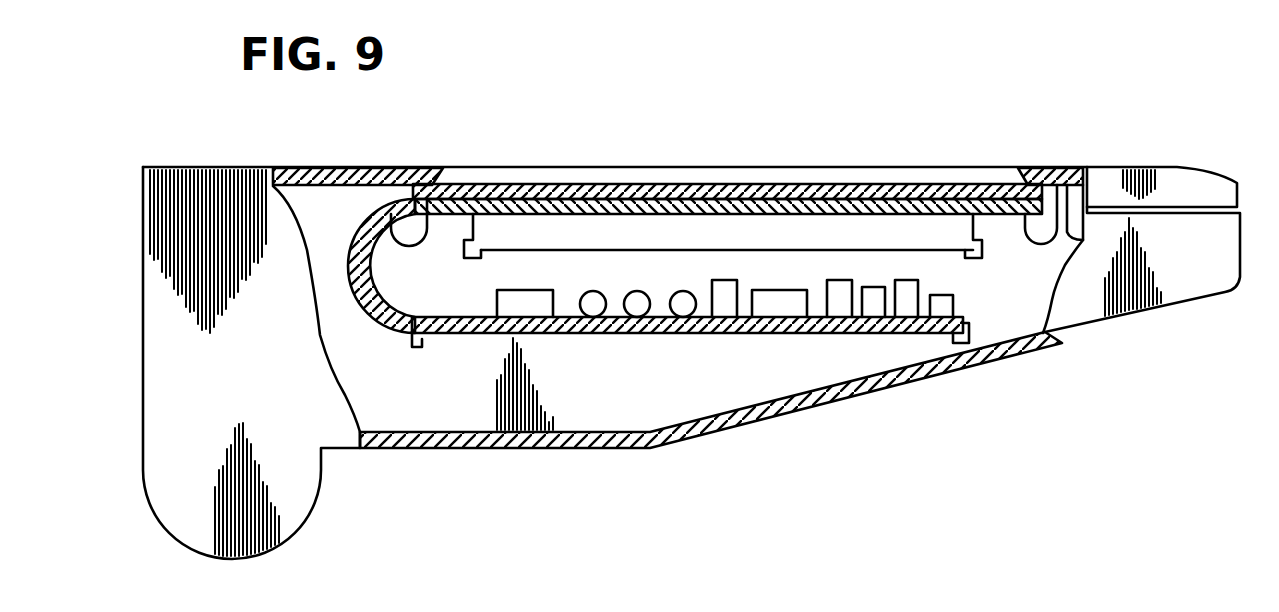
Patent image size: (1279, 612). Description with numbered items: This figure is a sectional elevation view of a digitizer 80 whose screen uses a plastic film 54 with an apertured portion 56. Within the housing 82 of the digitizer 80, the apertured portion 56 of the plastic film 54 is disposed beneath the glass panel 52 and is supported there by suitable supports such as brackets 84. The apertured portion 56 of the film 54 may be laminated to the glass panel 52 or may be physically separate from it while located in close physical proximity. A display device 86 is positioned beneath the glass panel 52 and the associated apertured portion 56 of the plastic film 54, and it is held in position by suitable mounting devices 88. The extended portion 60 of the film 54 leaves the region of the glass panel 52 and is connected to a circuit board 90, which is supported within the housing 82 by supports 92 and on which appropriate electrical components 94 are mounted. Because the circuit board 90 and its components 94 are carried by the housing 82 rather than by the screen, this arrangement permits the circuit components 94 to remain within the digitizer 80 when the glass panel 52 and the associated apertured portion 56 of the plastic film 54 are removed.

The digitizer 80 is at (1186, 154).
The glass panel 52 is at (563, 183).
The apertured portion of the plastic film 56 is at (777, 197).
The plastic film 54 is at (378, 305).
The extended portion of the film 60 is at (372, 229).
The brackets 84 is at (404, 240).
The mounting devices 88 is at (479, 259).
The display device 86 is at (913, 244).
The electrical components 94 is at (675, 292).
The circuit board 90 is at (646, 335).
The supports 92 is at (408, 343).
The housing 82 is at (861, 397).